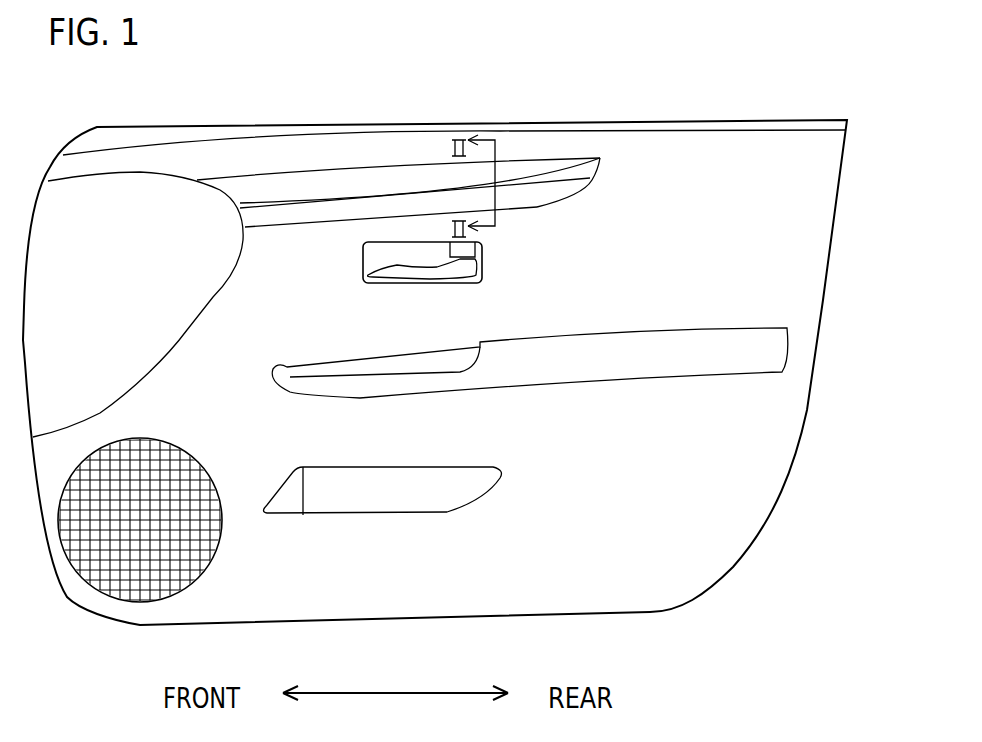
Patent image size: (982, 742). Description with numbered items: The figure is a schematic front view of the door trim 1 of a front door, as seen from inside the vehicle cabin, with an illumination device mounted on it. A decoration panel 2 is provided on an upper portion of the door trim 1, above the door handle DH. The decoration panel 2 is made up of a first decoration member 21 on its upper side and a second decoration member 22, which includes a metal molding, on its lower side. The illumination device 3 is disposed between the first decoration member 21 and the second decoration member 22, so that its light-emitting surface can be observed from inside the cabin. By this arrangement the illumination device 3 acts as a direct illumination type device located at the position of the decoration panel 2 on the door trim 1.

The door trim 1 is at (766, 533).
The decoration panel 2 is at (439, 183).
The first decoration member 21 is at (392, 180).
The second decoration member 22 is at (512, 200).
The illumination device 3 is at (533, 178).
The door handle DH is at (422, 270).